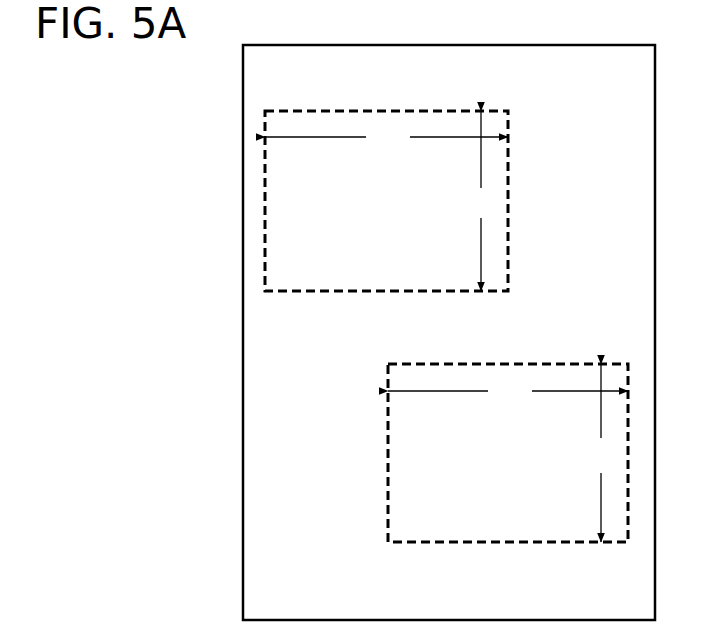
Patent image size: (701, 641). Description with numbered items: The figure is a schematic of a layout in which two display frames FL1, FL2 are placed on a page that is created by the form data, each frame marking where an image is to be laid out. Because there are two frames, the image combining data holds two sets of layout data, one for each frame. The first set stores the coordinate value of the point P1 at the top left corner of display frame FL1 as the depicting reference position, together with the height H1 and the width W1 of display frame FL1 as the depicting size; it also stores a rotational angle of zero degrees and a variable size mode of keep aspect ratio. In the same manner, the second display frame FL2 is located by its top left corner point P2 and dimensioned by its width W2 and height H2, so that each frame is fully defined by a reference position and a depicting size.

The point at top left corner of display frame FL1 P1 is at (264, 111).
The display frame FL1 is at (508, 171).
The width of display frame FL1 W1 is at (386, 138).
The height of display frame FL1 H1 is at (482, 201).
The point at top left corner of display frame FL2 P2 is at (388, 364).
The display frame FL2 is at (388, 423).
The width of display frame FL2 W2 is at (508, 391).
The height of display frame FL2 H2 is at (601, 453).